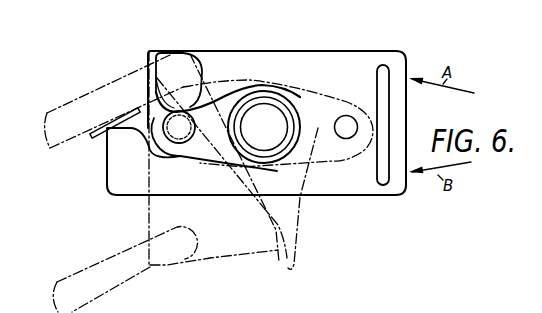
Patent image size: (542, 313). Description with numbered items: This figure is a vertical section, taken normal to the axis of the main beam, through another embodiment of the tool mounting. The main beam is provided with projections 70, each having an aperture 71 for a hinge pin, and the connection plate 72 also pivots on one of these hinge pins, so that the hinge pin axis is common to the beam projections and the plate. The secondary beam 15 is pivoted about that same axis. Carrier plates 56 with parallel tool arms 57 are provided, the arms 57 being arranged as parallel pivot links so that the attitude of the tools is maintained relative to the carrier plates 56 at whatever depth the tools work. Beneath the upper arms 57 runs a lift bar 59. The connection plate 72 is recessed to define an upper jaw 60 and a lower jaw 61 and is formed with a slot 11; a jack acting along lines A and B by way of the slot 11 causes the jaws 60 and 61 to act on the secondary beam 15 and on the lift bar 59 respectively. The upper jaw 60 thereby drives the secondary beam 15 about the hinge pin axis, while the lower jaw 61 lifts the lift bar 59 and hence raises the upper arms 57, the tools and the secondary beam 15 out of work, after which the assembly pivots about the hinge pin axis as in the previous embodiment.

The slot 11 is at (378, 63).
The secondary beam 15 is at (163, 117).
The carrier plate 56 is at (163, 207).
The parallel tool arm 57 is at (67, 117).
The lift bar 59 is at (100, 124).
The upper jaw 60 is at (173, 93).
The lower jaw 61 is at (118, 172).
The projection 70 is at (330, 102).
The aperture 71 is at (347, 139).
The connection plate 72 is at (306, 56).